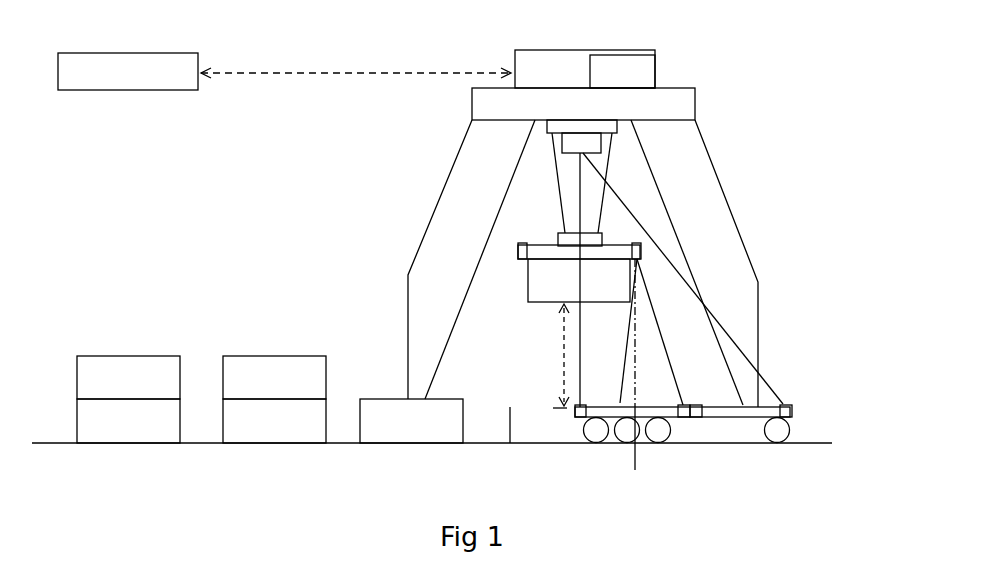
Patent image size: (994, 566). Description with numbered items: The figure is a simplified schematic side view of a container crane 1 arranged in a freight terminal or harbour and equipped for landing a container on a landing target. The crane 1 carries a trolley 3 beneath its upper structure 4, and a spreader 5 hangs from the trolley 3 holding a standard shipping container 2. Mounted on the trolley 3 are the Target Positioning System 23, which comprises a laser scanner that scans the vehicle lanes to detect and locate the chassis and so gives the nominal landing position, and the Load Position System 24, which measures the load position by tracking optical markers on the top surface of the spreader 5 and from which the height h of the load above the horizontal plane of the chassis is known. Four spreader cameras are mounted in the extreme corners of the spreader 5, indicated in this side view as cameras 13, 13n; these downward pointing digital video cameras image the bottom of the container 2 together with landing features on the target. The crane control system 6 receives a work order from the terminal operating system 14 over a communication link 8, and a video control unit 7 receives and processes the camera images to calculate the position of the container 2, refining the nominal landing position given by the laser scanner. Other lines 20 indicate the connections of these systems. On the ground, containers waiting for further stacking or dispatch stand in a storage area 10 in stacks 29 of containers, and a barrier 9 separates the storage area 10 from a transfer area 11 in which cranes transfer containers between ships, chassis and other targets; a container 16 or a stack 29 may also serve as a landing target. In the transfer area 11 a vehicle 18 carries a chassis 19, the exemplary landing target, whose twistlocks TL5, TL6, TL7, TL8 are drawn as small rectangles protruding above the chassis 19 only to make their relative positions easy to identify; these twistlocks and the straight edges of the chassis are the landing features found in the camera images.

The container crane 1 is at (722, 110).
The container 2 is at (528, 282).
The trolley 3 is at (540, 127).
The top frame beam 4 is at (460, 103).
The spreader 5 is at (547, 243).
The crane control system 6 is at (518, 58).
The video control unit 7 is at (642, 62).
The communication link 8 is at (356, 63).
The barrier 9 is at (504, 410).
The storage area 10 is at (315, 433).
The transfer area 11 is at (717, 436).
The spreader camera 13 is at (518, 247).
The spreader camera 13n is at (643, 252).
The terminal operating system 14 is at (128, 96).
The container 16 is at (171, 356).
The truck trailer 18 is at (563, 408).
The chassis 19 is at (803, 402).
The hoisting ropes / sensors 20 is at (585, 210).
The target positioning system 23 is at (687, 136).
The load position system 24 is at (605, 142).
The stack of containers 29 is at (83, 349).
The height of the load h is at (557, 352).
The twistlock TL5 is at (792, 403).
The twistlock TL6 is at (702, 417).
The twistlock TL7 is at (683, 417).
The twistlock TL8 is at (575, 418).